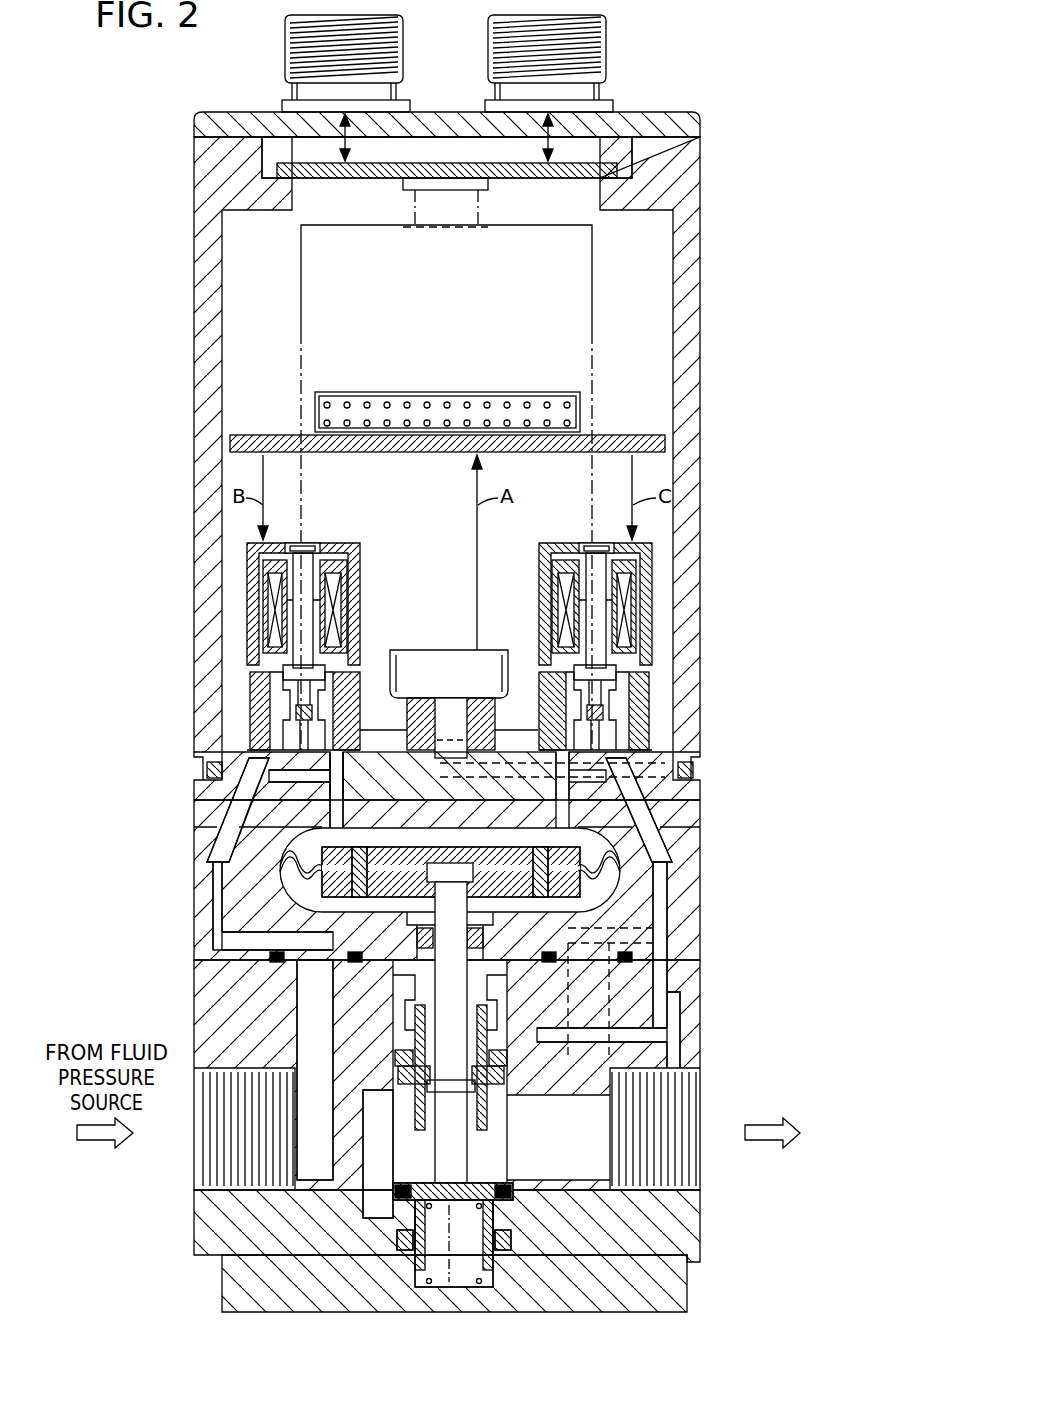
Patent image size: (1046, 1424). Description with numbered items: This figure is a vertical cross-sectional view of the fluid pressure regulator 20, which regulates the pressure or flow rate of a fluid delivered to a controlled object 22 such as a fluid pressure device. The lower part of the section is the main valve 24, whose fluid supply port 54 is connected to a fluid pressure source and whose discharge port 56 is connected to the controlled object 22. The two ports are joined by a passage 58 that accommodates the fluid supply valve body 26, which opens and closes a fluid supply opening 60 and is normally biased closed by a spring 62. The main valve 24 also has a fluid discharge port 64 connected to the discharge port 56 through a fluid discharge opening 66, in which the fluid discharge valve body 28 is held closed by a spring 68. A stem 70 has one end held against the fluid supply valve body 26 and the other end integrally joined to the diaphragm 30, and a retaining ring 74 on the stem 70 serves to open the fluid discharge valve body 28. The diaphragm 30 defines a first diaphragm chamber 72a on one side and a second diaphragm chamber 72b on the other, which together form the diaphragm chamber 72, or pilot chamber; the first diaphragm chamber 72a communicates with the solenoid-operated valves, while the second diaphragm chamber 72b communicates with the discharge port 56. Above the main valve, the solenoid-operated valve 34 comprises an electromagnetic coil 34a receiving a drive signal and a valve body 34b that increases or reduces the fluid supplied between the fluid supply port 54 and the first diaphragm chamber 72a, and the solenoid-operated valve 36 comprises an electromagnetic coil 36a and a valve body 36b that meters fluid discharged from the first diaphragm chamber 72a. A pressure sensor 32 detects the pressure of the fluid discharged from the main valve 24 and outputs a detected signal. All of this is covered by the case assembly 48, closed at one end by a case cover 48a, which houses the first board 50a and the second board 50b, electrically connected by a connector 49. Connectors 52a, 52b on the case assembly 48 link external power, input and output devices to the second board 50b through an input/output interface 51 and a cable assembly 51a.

The fluid pressure regulator 20 is at (762, 44).
The controlled object 22 is at (779, 1094).
The main valve 24 is at (706, 888).
The fluid supply valve body 26 is at (430, 1215).
The fluid discharge valve body 28 is at (398, 1072).
The diaphragm 30 is at (320, 892).
The pressure sensor 32 is at (417, 650).
The solenoid-operated valve 34 is at (248, 646).
The electromagnetic coil 34a is at (270, 600).
The valve body 34b is at (290, 705).
The solenoid-operated valve 36 is at (656, 646).
The electromagnetic coil 36a is at (630, 585).
The valve body 36b is at (630, 695).
The case assembly 48 is at (699, 237).
The case cover 48a is at (690, 145).
The connector 49 is at (578, 412).
The first board 50a is at (668, 444).
The second board 50b is at (565, 296).
The input/output interface 51 is at (343, 179).
The cable assembly 51a is at (478, 210).
The connector 52a is at (285, 75).
The connector 52b is at (607, 62).
The fluid supply port 54 is at (200, 1182).
The discharge port 56 is at (706, 1192).
The passage 58 is at (352, 1175).
The fluid supply opening 60 is at (395, 1185).
The spring 62 is at (478, 1275).
The fluid discharge port 64 is at (690, 992).
The fluid discharge opening 66 is at (530, 1068).
The spring 68 is at (372, 976).
The stem 70 is at (465, 1130).
The diaphragm chamber 72 is at (290, 880).
The first diaphragm chamber 72a is at (285, 850).
The second diaphragm chamber 72b is at (260, 940).
The retaining ring 74 is at (470, 1088).